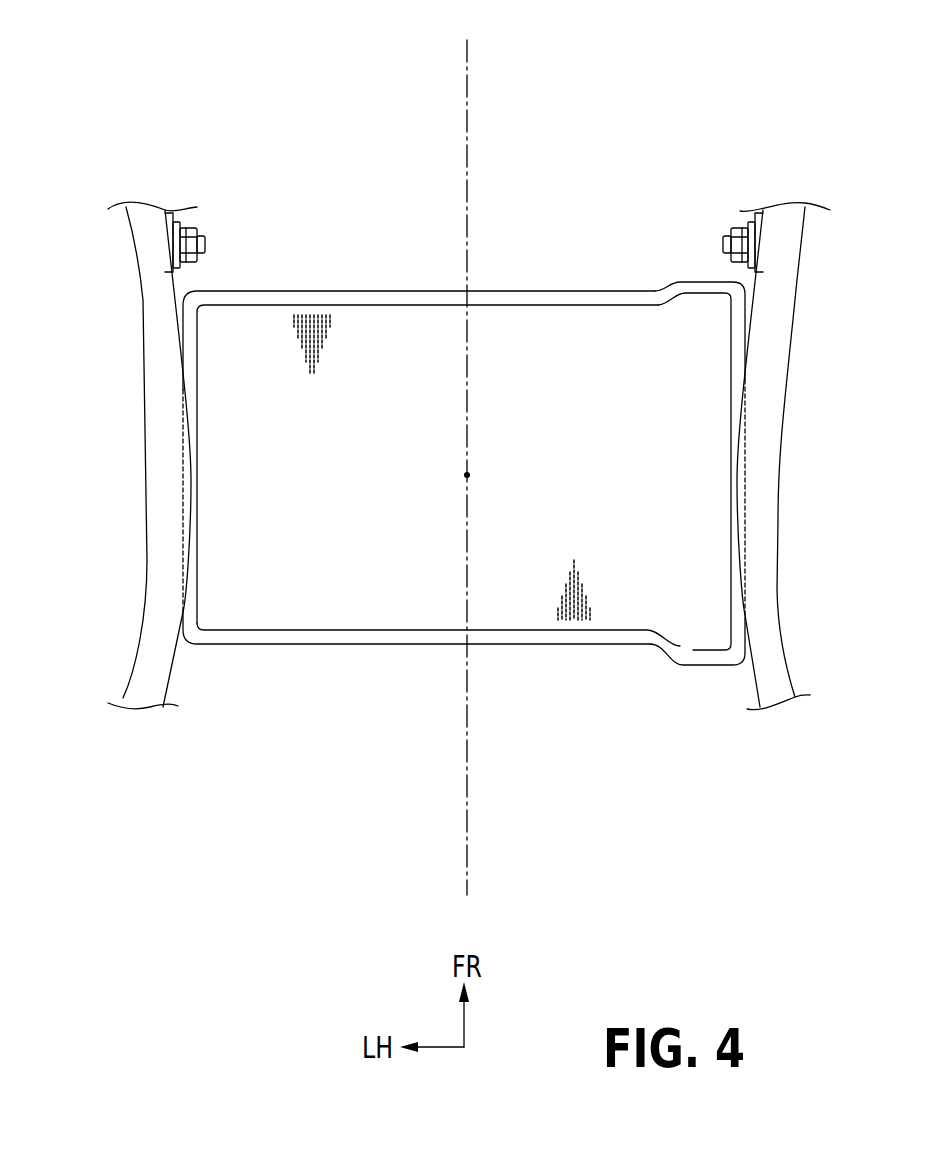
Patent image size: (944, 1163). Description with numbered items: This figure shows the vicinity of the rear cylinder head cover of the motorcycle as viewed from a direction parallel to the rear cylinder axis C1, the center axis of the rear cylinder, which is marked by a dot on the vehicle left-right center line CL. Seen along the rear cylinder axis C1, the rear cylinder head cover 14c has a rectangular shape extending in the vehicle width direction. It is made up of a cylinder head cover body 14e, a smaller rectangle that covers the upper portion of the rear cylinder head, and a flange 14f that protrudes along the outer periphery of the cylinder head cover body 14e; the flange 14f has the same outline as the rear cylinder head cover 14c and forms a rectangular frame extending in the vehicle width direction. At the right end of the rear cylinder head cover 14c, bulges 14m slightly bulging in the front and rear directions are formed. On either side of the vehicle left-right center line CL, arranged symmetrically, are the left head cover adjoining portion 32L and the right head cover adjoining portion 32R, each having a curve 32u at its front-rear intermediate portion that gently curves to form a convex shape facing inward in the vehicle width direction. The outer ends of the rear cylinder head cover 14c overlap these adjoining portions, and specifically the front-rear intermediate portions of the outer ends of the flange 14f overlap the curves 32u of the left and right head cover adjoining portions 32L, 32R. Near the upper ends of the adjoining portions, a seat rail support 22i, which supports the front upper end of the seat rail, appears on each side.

The vehicle left-right center line CL is at (469, 65).
The rear cylinder axis C1 is at (467, 475).
The left head cover adjoining portion 32L is at (157, 457).
The right head cover adjoining portion 32R is at (772, 462).
The curve 32u is at (188, 506).
The seat rail support 22i is at (180, 247).
The rear cylinder head cover 14c is at (431, 555).
The flange 14f is at (245, 637).
The cylinder head cover body 14e is at (350, 583).
The bulge 14m is at (699, 287).